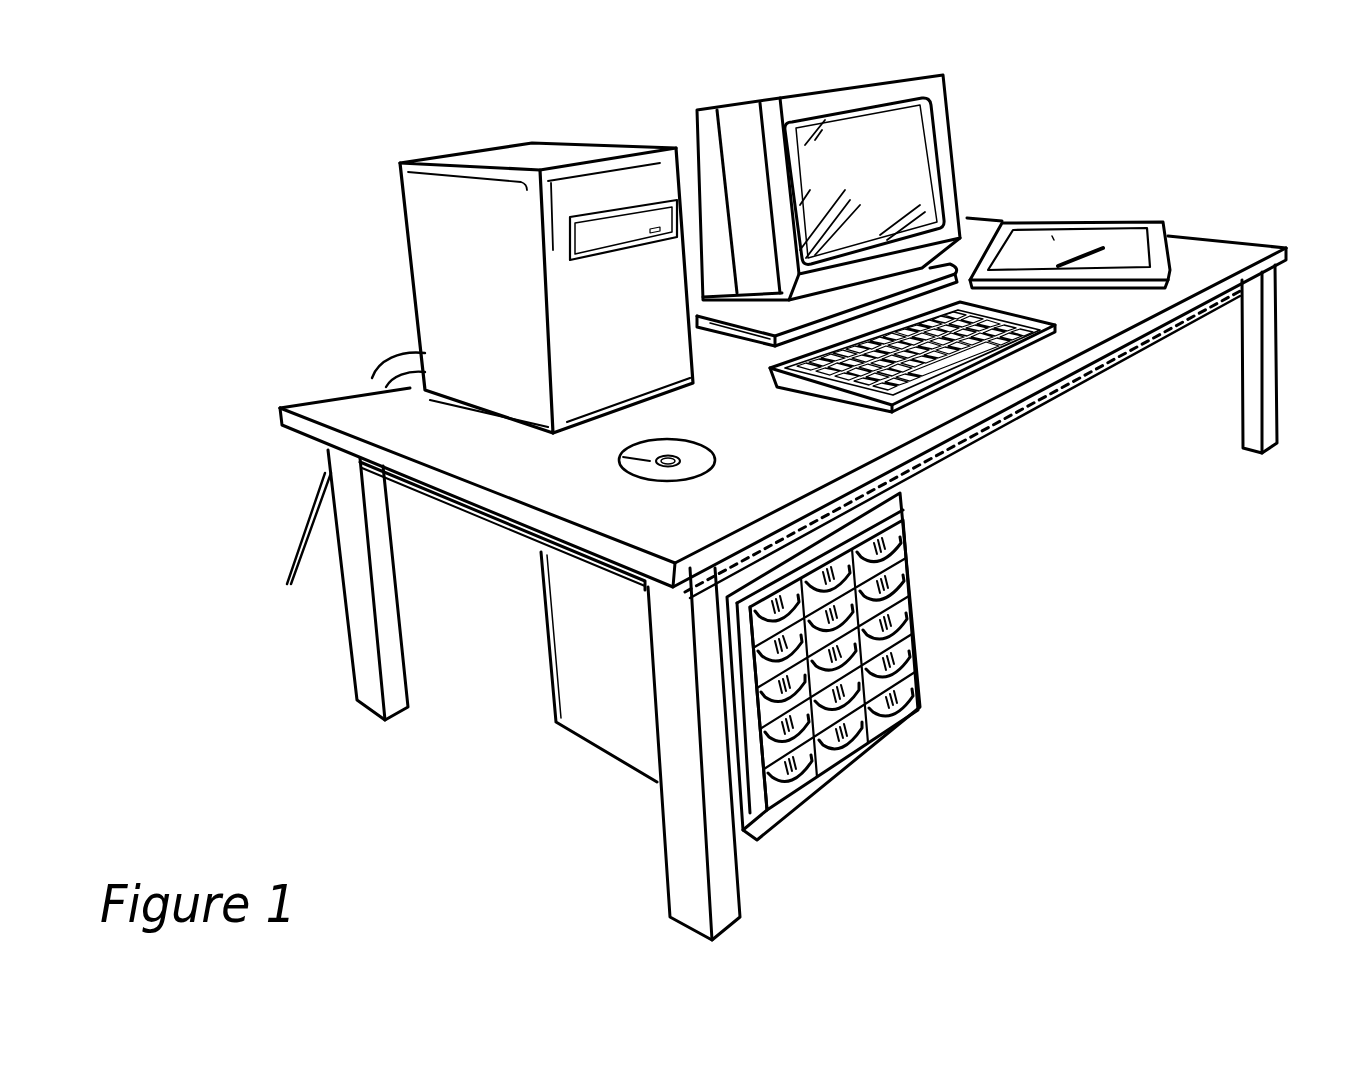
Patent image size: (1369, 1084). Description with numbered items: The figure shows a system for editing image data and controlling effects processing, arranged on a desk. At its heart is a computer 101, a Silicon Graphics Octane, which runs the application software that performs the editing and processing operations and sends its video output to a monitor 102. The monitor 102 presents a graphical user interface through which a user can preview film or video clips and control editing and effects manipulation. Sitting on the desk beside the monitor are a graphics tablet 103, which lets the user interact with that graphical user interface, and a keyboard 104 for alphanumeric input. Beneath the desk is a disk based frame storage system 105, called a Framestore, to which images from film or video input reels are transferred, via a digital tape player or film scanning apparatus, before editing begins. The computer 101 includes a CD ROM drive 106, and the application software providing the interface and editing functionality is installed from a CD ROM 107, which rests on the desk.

The computer 101 is at (509, 288).
The monitor 102 is at (917, 160).
The graphics tablet 103 is at (1123, 247).
The keyboard 104 is at (940, 357).
The disk based frame storage system 105 is at (913, 622).
The CD ROM drive 106 is at (620, 223).
The CD ROM 107 is at (620, 455).